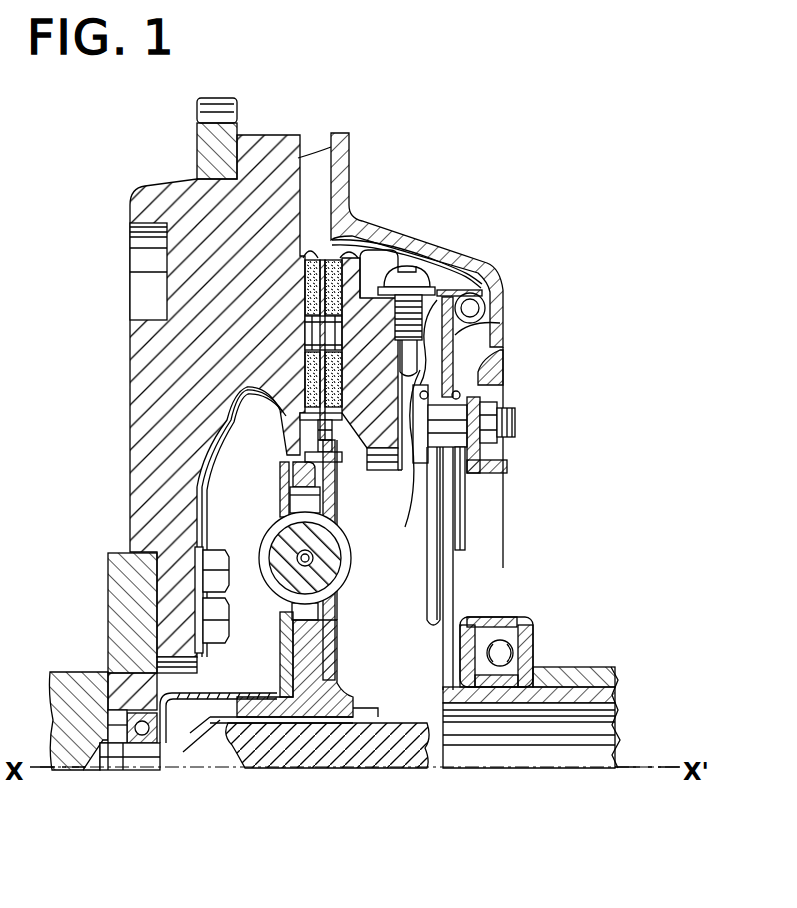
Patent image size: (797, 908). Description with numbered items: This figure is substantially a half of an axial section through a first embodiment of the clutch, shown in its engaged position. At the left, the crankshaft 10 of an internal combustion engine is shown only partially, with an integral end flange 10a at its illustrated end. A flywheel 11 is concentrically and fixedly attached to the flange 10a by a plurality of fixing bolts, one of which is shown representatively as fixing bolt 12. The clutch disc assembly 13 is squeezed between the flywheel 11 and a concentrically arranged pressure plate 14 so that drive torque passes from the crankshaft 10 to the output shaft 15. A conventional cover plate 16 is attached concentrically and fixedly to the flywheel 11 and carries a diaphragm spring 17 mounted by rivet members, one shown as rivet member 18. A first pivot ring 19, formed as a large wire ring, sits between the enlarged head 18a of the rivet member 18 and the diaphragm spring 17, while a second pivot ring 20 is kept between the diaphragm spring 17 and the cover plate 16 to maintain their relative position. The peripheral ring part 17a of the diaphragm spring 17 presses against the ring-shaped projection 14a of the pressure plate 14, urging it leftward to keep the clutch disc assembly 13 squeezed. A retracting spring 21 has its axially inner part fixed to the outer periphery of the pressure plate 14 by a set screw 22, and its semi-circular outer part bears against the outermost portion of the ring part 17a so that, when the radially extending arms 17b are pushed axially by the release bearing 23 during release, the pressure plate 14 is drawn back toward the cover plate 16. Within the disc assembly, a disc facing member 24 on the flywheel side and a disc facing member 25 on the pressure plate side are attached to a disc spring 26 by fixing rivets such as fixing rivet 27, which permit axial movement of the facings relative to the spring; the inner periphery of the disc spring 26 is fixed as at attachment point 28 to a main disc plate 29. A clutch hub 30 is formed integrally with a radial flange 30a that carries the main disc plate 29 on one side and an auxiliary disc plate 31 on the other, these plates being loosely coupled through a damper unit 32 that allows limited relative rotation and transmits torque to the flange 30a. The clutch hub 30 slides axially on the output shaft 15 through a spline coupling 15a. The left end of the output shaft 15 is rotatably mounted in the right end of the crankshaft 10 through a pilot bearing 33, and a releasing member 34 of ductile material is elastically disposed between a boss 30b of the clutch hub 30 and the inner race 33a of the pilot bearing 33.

The crankshaft 10 is at (71, 763).
The end flange 10a is at (110, 573).
The flywheel 11 is at (236, 309).
The fixing bolt 12 is at (200, 552).
The clutch disc assembly 13 is at (359, 561).
The pressure plate 14 is at (379, 377).
The ring-shaped projection 14a is at (456, 290).
The output shaft 15 is at (403, 754).
The spline coupling 15a is at (385, 707).
The cover plate 16 is at (470, 262).
The diaphragm spring 17 is at (470, 352).
The peripheral ring part 17a is at (468, 322).
The arm 17b is at (443, 628).
The rivet member 18 is at (454, 438).
The enlarged head 18a is at (412, 505).
The first pivot ring 19 is at (401, 402).
The second pivot ring 20 is at (470, 398).
The retracting spring 21 is at (484, 290).
The set screw 22 is at (415, 275).
The release bearing 23 is at (534, 622).
The disc facing member 24 is at (305, 257).
The disc facing member 25 is at (335, 256).
The disc spring 26 is at (302, 425).
The fixing rivet 27 is at (313, 347).
The attachment point 28 is at (316, 442).
The main disc plate 29 is at (335, 490).
The clutch hub 30 is at (378, 674).
The flange 30a is at (290, 665).
The boss 30b is at (282, 723).
The auxiliary disc plate 31 is at (281, 488).
The damper unit 32 is at (284, 573).
The pilot bearing 33 is at (143, 706).
The inner race 33a is at (145, 742).
The releasing member 34 is at (217, 688).